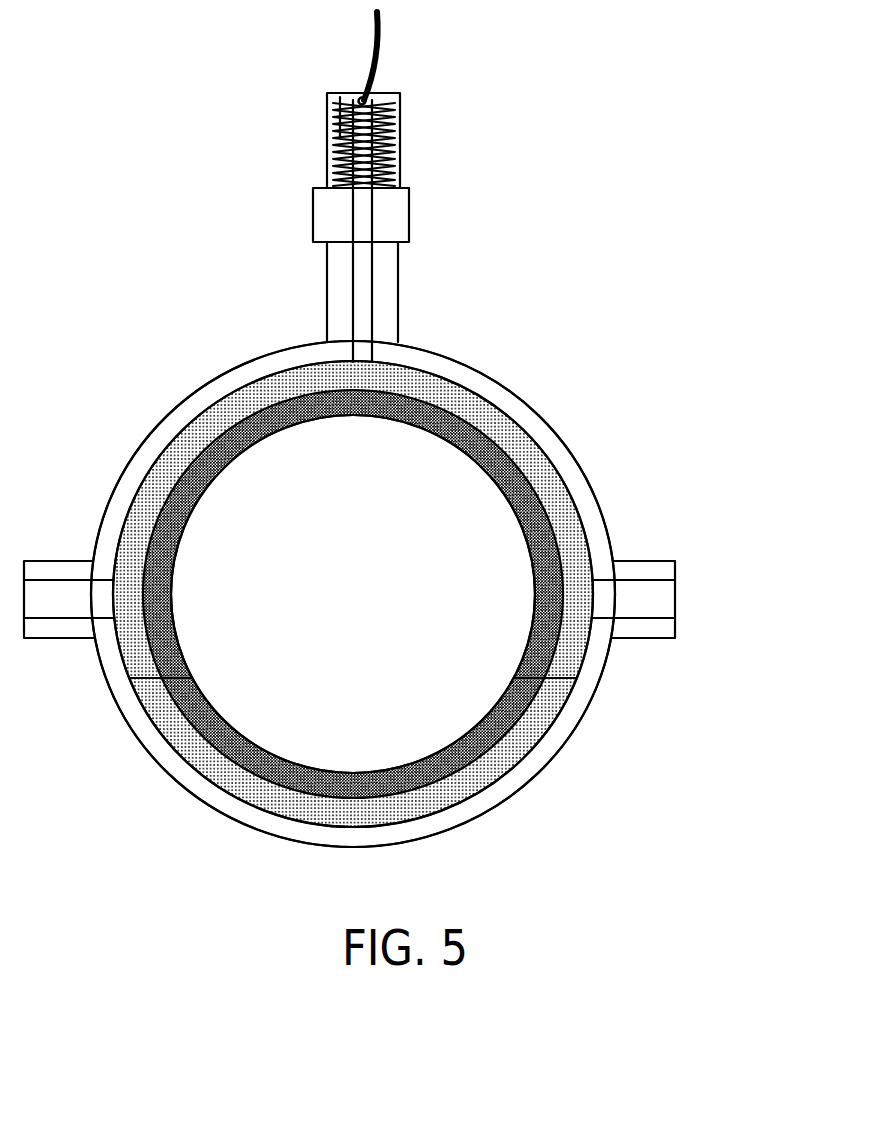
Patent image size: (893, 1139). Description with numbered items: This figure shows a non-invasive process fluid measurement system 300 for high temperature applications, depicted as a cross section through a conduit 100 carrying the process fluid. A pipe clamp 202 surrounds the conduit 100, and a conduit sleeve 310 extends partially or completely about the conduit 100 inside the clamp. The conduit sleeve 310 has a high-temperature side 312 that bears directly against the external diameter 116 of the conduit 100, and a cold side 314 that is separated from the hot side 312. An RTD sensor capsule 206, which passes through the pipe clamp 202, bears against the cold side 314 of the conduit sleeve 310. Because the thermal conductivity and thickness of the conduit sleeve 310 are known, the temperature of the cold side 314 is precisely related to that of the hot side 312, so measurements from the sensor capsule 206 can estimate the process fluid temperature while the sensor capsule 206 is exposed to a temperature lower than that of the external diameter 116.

The conduit 100 is at (510, 733).
The external diameter 116 is at (557, 522).
The pipe clamp 202 is at (575, 447).
The sensor capsule 206 is at (348, 282).
The non-invasive process fluid measurement system 300 is at (398, 429).
The conduit sleeve 310 is at (488, 384).
The high-temperature side 312 is at (342, 389).
The cold side 314 is at (408, 362).